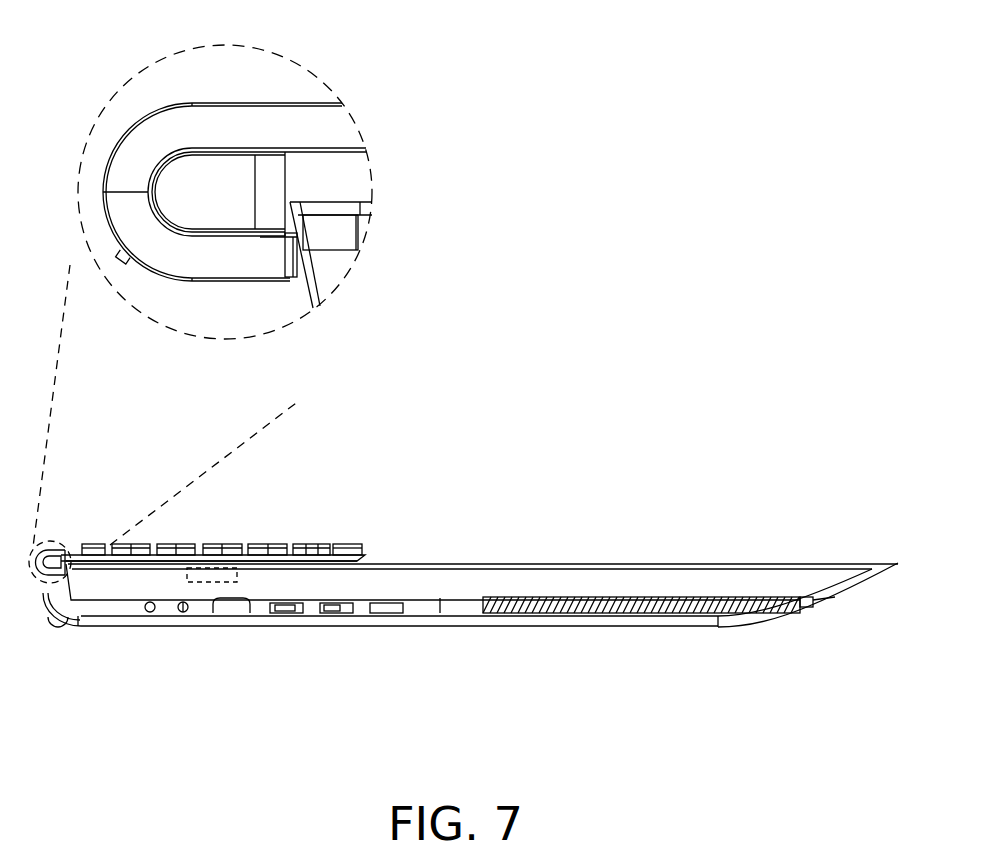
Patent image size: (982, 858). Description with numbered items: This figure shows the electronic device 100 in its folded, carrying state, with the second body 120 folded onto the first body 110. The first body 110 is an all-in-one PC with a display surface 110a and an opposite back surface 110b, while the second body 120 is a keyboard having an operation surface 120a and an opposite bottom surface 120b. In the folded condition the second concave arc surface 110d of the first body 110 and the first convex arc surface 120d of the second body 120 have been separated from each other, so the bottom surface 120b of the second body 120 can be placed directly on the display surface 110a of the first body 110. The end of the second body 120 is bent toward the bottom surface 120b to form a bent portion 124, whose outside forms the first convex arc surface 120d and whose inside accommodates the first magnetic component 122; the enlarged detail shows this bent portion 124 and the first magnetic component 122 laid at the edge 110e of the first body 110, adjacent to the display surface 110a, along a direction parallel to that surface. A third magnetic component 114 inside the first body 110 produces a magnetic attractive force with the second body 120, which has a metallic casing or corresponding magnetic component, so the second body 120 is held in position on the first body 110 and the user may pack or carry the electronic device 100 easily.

The electronic device 100 is at (888, 513).
The first body 110 is at (682, 582).
The display surface 110a is at (564, 558).
The back surface 110b is at (566, 633).
The second concave arc surface 110d is at (300, 306).
The edge 110e is at (295, 251).
The third magnetic component 114 is at (197, 583).
The second body 120 is at (266, 546).
The operation surface 120a is at (323, 538).
The bottom surface 120b is at (299, 572).
The first convex arc surface 120d is at (117, 131).
The first magnetic component 122 is at (218, 178).
The bent portion 124 is at (180, 262).